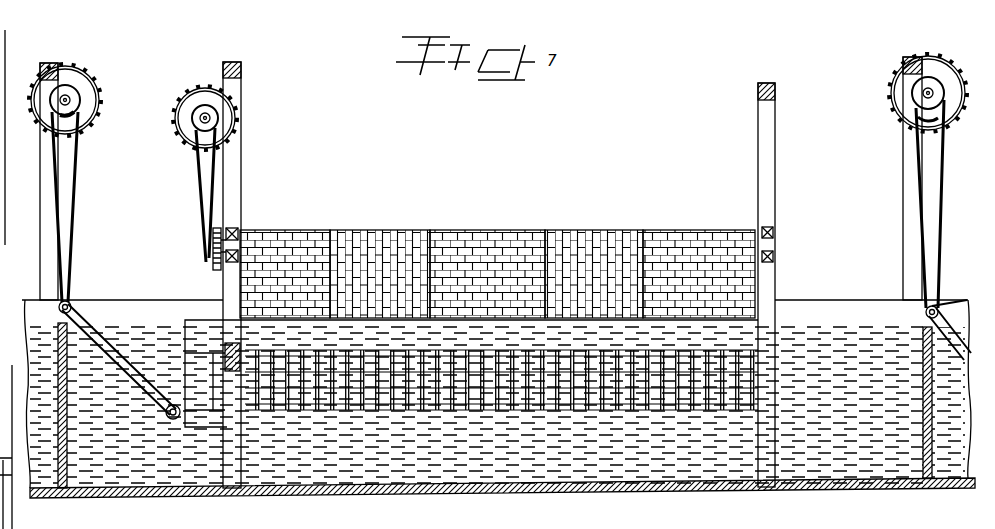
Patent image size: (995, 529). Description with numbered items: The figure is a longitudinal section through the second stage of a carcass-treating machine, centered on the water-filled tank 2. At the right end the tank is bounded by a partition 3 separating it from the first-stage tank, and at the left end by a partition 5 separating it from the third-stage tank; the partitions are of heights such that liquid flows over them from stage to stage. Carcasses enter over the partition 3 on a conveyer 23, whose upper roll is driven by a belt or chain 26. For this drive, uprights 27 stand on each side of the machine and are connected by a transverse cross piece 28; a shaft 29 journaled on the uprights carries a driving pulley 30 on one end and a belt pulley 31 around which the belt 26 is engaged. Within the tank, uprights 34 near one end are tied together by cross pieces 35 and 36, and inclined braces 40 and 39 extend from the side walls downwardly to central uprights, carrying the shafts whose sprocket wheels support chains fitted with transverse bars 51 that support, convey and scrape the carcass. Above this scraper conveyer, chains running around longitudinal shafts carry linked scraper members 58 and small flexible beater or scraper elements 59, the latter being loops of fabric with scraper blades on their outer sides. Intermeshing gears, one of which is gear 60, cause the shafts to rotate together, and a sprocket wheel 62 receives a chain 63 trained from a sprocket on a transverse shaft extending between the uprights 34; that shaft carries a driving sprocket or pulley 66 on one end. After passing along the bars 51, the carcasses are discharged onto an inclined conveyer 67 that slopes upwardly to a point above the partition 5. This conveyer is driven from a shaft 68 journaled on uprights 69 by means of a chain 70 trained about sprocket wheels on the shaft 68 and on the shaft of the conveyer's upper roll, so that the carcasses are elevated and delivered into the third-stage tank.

The tank 2 is at (578, 486).
The partition 3 is at (913, 342).
The partition 5 is at (58, 335).
The conveyer 23 is at (940, 310).
The belt or chain 26 is at (940, 233).
The uprights 27 is at (907, 237).
The transverse cross piece 28 is at (922, 63).
The shaft 29 is at (926, 95).
The driving pulley 30 is at (942, 74).
The belt pulley 31 is at (940, 125).
The uprights 34 is at (243, 190).
The cross piece 35 is at (776, 96).
The cross piece 36 is at (243, 68).
The braces 39 is at (222, 355).
The inclined braces 40 is at (777, 333).
The bars 51 is at (500, 408).
The linked scraper members 58 is at (298, 236).
The linked flexible beater or scraper elements 59 is at (378, 238).
The intermeshing gear 60 is at (240, 232).
The sprocket wheel 62 is at (211, 260).
The chain 63 is at (200, 176).
The driving sprocket or pulley 66 is at (203, 90).
The inclined conveyer 67 is at (110, 334).
The shaft 68 is at (78, 94).
The uprights 69 is at (60, 157).
The chain 70 is at (100, 108).